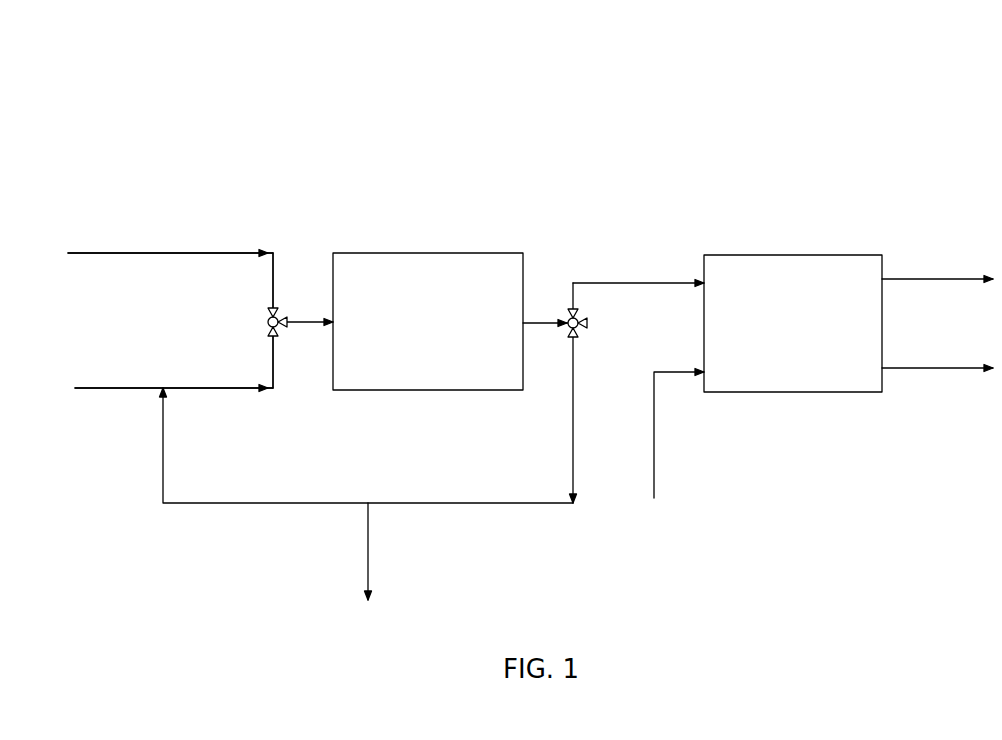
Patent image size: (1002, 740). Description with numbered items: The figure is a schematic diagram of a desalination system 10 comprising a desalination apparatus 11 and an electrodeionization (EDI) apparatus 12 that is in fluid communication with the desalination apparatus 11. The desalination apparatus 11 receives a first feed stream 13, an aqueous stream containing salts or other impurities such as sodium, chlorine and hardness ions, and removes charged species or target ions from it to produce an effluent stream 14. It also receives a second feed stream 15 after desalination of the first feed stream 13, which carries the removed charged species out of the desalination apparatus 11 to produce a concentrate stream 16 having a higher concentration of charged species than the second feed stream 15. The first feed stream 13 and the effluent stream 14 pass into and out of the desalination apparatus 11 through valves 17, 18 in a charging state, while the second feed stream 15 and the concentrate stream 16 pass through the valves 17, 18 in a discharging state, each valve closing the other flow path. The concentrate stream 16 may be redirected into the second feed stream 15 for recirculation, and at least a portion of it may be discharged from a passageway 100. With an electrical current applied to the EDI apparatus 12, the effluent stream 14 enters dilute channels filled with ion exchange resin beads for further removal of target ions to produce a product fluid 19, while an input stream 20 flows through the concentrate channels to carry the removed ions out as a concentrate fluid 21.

The desalination system 10 is at (212, 104).
The desalination apparatus 11 is at (427, 253).
The electrodeionization (EDI) apparatus 12 is at (795, 255).
The first feed stream 13 is at (157, 253).
The effluent stream 14 is at (640, 283).
The second feed stream 15 is at (102, 388).
The concentrate stream 16 is at (513, 503).
The valve 17 is at (267, 322).
The valve 18 is at (585, 328).
The product fluid 19 is at (927, 279).
The input stream 20 is at (654, 448).
The concentrate fluid 21 is at (937, 368).
The passageway 100 is at (368, 552).